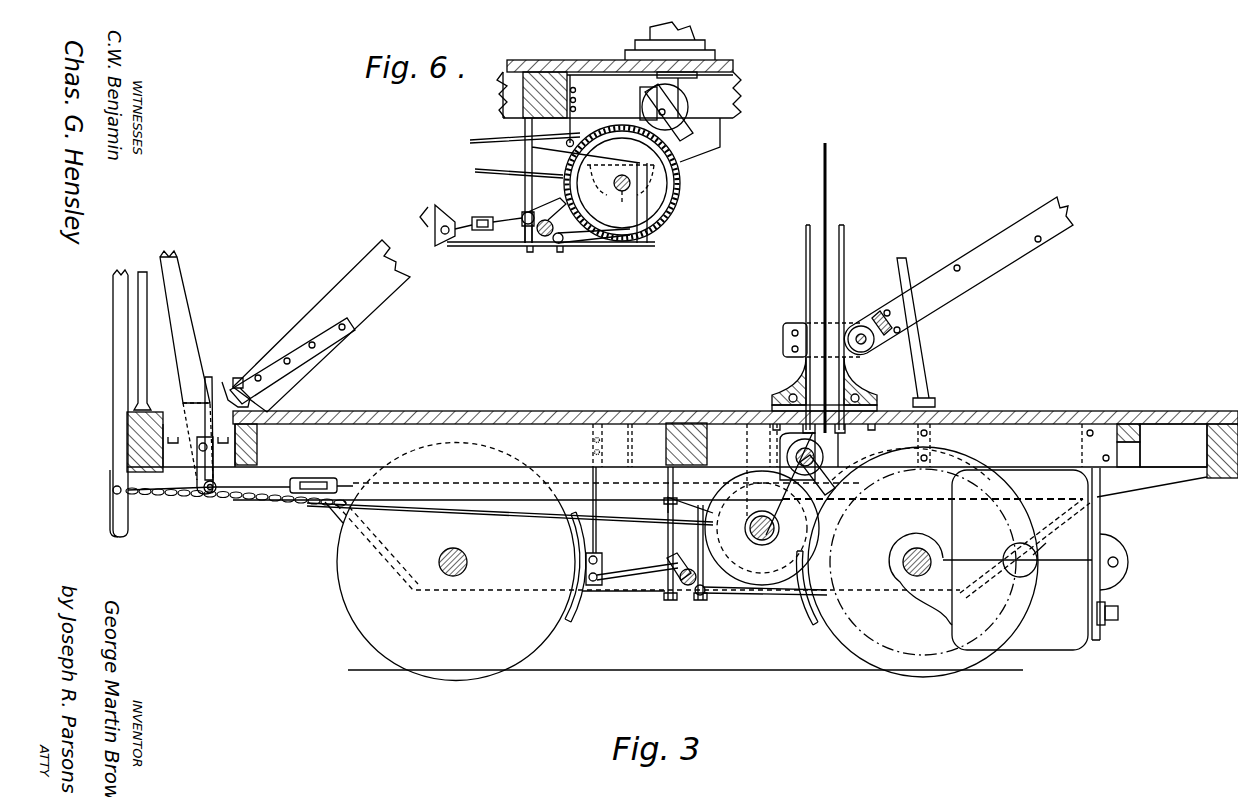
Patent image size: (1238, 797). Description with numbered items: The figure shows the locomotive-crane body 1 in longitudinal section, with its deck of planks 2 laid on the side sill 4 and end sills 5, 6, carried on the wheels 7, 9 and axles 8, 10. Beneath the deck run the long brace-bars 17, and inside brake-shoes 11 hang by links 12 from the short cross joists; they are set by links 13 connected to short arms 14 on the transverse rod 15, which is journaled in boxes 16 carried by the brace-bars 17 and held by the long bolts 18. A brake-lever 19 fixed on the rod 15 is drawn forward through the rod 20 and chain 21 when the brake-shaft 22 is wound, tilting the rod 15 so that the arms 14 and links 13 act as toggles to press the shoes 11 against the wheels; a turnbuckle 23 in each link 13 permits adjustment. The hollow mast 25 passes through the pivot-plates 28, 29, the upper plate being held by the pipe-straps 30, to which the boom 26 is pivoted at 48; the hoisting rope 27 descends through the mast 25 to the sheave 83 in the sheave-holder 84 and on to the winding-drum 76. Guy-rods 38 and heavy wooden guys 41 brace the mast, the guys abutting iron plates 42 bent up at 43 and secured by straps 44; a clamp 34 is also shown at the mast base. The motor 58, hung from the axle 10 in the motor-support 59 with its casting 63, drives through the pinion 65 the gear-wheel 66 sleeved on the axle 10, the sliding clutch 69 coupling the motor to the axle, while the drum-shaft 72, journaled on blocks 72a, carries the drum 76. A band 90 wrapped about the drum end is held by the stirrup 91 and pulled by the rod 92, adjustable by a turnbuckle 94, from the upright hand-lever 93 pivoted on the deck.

In FIG. 3, the locomotive-crane body 1 is at (682, 440).
In FIG. 6, the planks 2 is at (550, 60).
In FIG. 3, the planks 2 is at (371, 343).
In FIG. 3, the side sill 4 is at (363, 477).
In FIG. 3, the end sill 5 is at (127, 434).
In FIG. 3, the end sill 6 is at (1215, 478).
In FIG. 3, the wheel 7 is at (456, 589).
In FIG. 3, the axle 8 is at (463, 562).
In FIG. 3, the wheel 9 is at (912, 645).
In FIG. 3, the axle 10 is at (900, 556).
In FIG. 6, the inside brake-shoe 11 is at (438, 221).
In FIG. 3, the inside brake-shoe 11 is at (584, 610).
In FIG. 3, the link 12 is at (597, 550).
In FIG. 6, the link 13 is at (491, 220).
In FIG. 3, the link 13 is at (634, 577).
In FIG. 6, the short arm 14 is at (550, 240).
In FIG. 3, the short arm 14 is at (699, 598).
In FIG. 3, the rod or shaft 15 is at (683, 590).
In FIG. 3, the box 16 is at (668, 592).
In FIG. 6, the brace-bar 17 is at (553, 196).
In FIG. 3, the brace-bar 17 is at (372, 560).
In FIG. 6, the long bolt or rod 18 is at (527, 248).
In FIG. 3, the long bolt or rod 18 is at (672, 556).
In FIG. 6, the brake-lever 19 is at (532, 212).
In FIG. 3, the brake-lever 19 is at (752, 536).
In FIG. 6, the rod 20 is at (512, 176).
In FIG. 3, the rod 20 is at (410, 512).
In FIG. 3, the chain 21 is at (232, 505).
In FIG. 3, the brake-shaft 22 is at (113, 330).
In FIG. 6, the turnbuckle 23 is at (480, 232).
In FIG. 6, the mast 25 is at (692, 33).
In FIG. 3, the mast 25 is at (845, 256).
In FIG. 3, the boom 26 is at (1010, 270).
In FIG. 6, the hoisting rope or chain 27 is at (735, 84).
In FIG. 3, the hoisting rope or chain 27 is at (828, 218).
In FIG. 3, the pivot-plate 28 is at (860, 375).
In FIG. 3, the pivot-plate 29 is at (879, 406).
In FIG. 3, the pipe-strap 30 is at (850, 325).
In FIG. 3, the clamp 34 is at (841, 427).
In FIG. 3, the guy-rod 38 is at (917, 353).
In FIG. 3, the wooden guy 41 is at (362, 305).
In FIG. 3, the iron plate 42 is at (208, 386).
In FIG. 3, the bent-up portion 43 is at (226, 382).
In FIG. 3, the strap 44 is at (305, 357).
In FIG. 3, the pivot 48 is at (863, 333).
In FIG. 3, the motor 58 is at (1068, 650).
In FIG. 3, the motor-support 59 is at (1101, 545).
In FIG. 3, the casting 63 is at (1111, 622).
In FIG. 3, the pinion 65 is at (1017, 553).
In FIG. 3, the gear-wheel 66 is at (989, 598).
In FIG. 6, the sliding clutch 69 is at (676, 206).
In FIG. 6, the winding-drum shaft 72 is at (622, 196).
In FIG. 3, the winding-drum shaft 72 is at (438, 482).
In FIG. 6, the block 72a is at (723, 140).
In FIG. 3, the block 72a is at (873, 498).
In FIG. 6, the winding-drum 76 is at (681, 188).
In FIG. 6, the sheave 83 is at (677, 107).
In FIG. 3, the sheave 83 is at (824, 458).
In FIG. 6, the sheave-holder 84 is at (682, 130).
In FIG. 3, the sheave-holder 84 is at (826, 482).
In FIG. 6, the band 90 is at (528, 92).
In FIG. 3, the band 90 is at (690, 424).
In FIG. 6, the stirrup 91 is at (587, 111).
In FIG. 3, the stirrup 91 is at (734, 446).
In FIG. 6, the rod 92 is at (512, 143).
In FIG. 3, the hand-lever 93 is at (182, 355).
In FIG. 3, the turnbuckle 94 is at (314, 478).